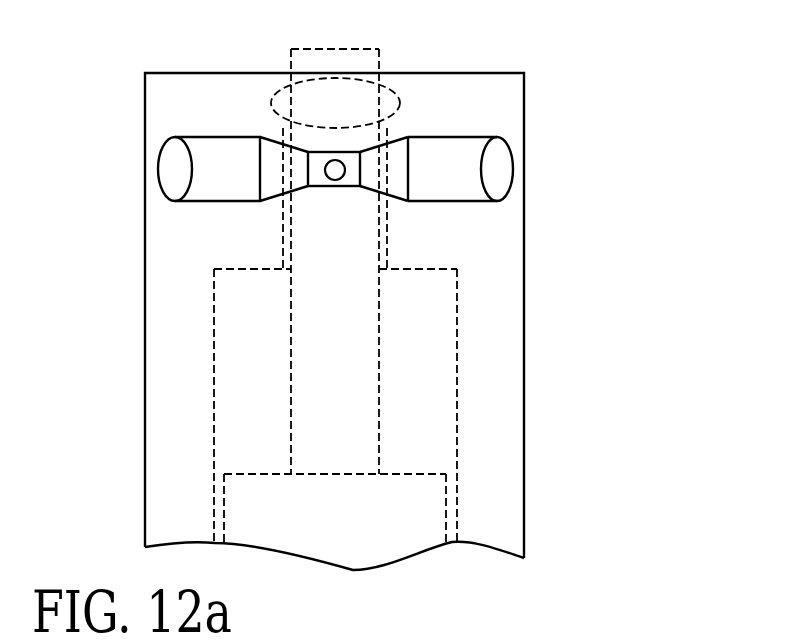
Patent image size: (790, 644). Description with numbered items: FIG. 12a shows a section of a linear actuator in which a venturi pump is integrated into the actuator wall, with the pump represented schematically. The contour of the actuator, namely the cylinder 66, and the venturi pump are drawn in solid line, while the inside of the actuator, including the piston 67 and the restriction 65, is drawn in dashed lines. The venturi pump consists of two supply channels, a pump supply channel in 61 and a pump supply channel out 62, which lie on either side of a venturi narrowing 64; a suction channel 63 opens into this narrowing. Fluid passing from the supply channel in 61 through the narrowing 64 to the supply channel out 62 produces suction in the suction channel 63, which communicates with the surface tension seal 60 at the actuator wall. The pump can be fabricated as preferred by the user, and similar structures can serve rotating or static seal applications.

The surface tension seal 60 is at (402, 99).
The pump supply channel in 61 is at (239, 156).
The pump supply channel out 62 is at (445, 170).
The suction channel 63 is at (347, 172).
The venturi narrowing 64 is at (338, 188).
The restriction 65 is at (383, 243).
The cylinder 66 is at (500, 420).
The piston 67 is at (353, 493).